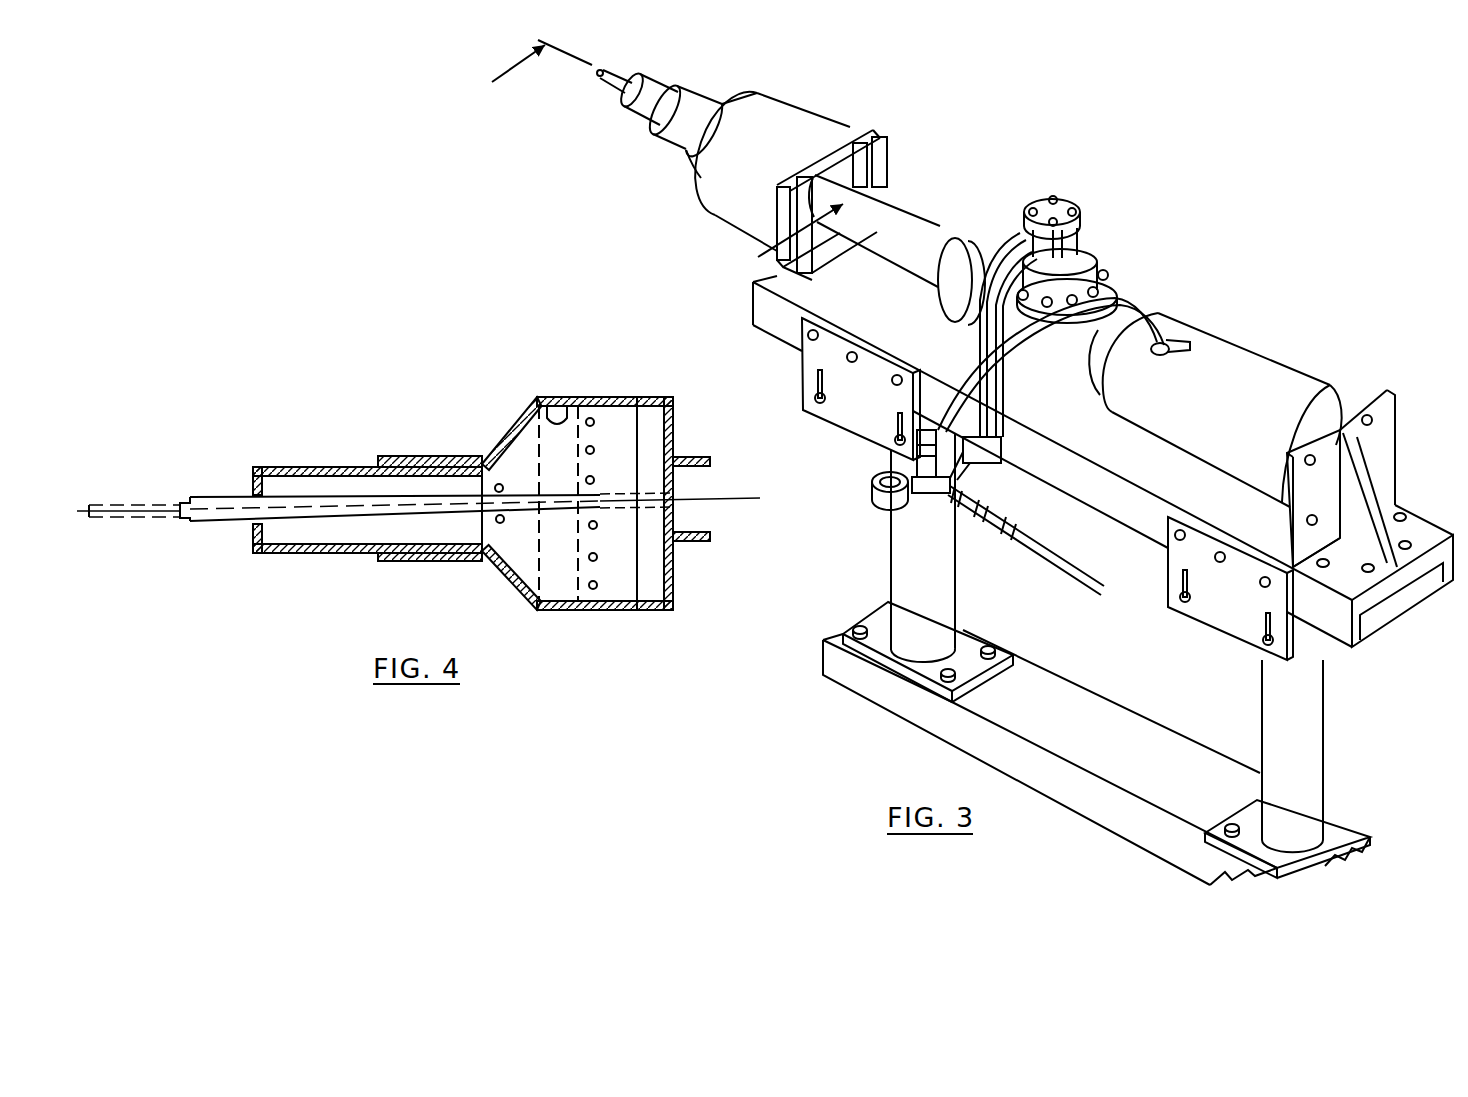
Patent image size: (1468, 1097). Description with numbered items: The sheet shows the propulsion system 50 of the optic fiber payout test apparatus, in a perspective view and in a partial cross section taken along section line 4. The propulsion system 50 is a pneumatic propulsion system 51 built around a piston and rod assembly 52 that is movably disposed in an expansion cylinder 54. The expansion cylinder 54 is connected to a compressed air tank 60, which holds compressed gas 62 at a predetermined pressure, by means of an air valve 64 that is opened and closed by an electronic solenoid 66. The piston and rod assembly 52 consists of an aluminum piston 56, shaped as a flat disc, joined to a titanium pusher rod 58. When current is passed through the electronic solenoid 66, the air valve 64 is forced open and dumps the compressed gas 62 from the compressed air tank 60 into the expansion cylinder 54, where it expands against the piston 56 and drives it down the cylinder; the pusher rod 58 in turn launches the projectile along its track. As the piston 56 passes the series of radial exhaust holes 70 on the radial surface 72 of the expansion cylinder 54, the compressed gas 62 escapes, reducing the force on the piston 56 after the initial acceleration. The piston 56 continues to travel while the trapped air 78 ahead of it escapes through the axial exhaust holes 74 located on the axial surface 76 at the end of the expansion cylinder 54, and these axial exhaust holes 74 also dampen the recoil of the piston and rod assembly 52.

In FIG. 3, the section line of FIG. 4 is at (655, 157).
In FIG. 3, the propulsion system 50 is at (915, 152).
In FIG. 4, the pneumatic propulsion system 51 is at (560, 396).
In FIG. 3, the pneumatic propulsion system 51 is at (800, 100).
In FIG. 4, the piston and rod assembly 52 is at (617, 530).
In FIG. 4, the expansion cylinder 54 is at (637, 397).
In FIG. 3, the expansion cylinder 54 is at (805, 110).
In FIG. 4, the piston 56 is at (660, 429).
In FIG. 3, the piston 56 is at (957, 285).
In FIG. 4, the pusher rod 58 is at (366, 498).
In FIG. 3, the compressed air tank 60 is at (1245, 350).
In FIG. 4, the compressed gas 62 is at (693, 482).
In FIG. 3, the compressed gas 62 is at (1258, 390).
In FIG. 3, the air valve 64 is at (1067, 200).
In FIG. 3, the electronic solenoid 66 is at (1001, 440).
In FIG. 4, the radial exhaust holes 70 is at (596, 480).
In FIG. 4, the radial surface 72 is at (553, 418).
In FIG. 4, the axial exhaust holes 74 is at (500, 523).
In FIG. 4, the axial surface 76 is at (487, 477).
In FIG. 4, the trapped air 78 is at (452, 527).